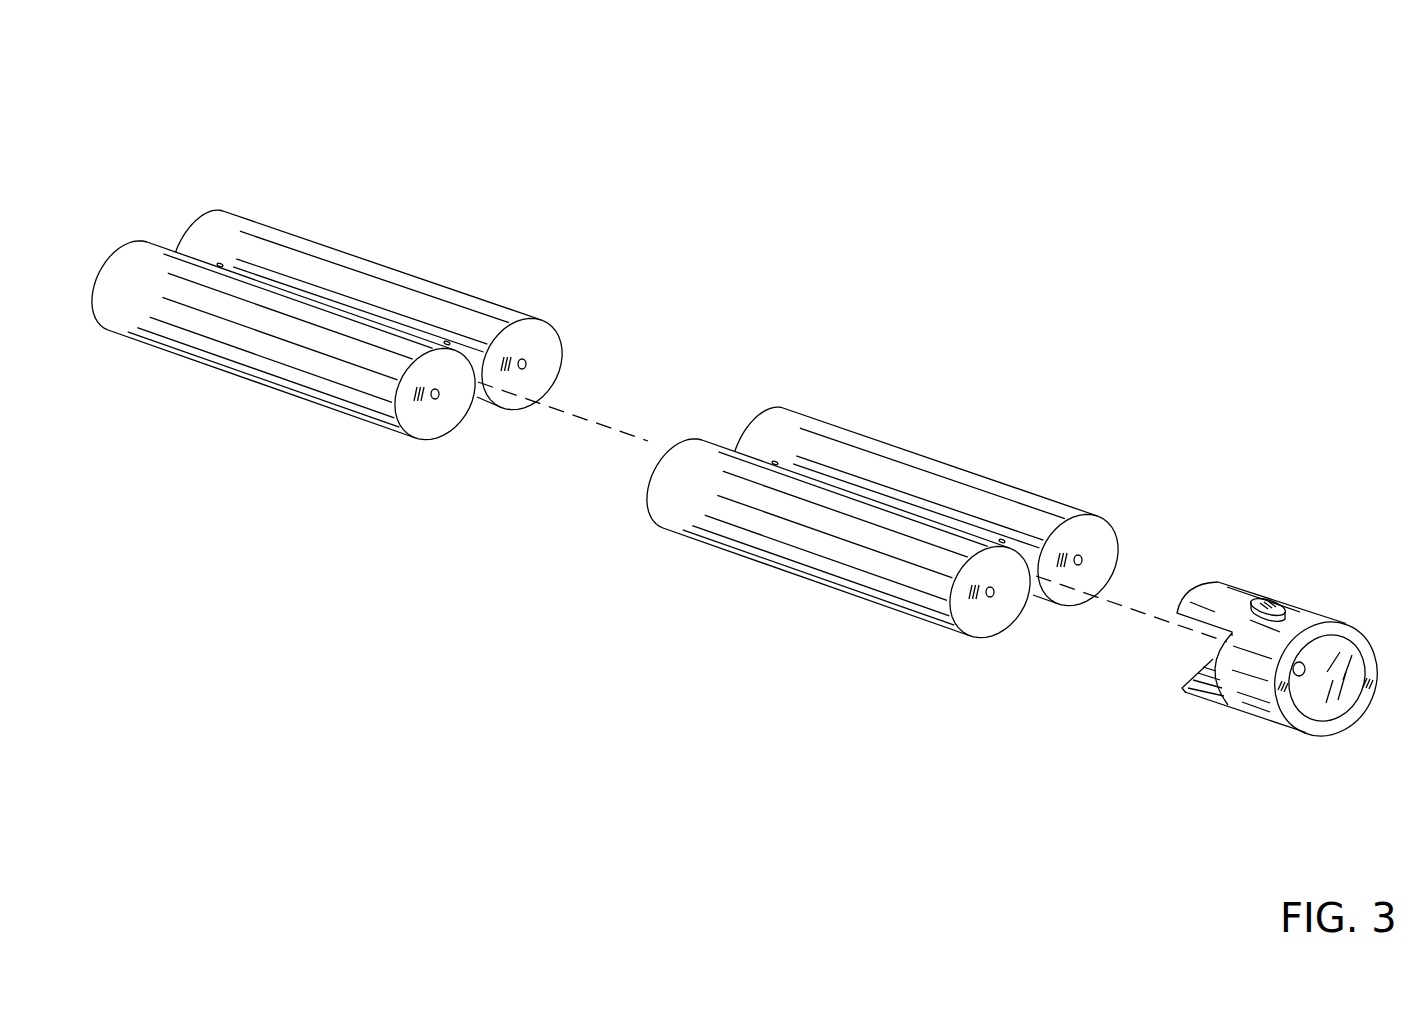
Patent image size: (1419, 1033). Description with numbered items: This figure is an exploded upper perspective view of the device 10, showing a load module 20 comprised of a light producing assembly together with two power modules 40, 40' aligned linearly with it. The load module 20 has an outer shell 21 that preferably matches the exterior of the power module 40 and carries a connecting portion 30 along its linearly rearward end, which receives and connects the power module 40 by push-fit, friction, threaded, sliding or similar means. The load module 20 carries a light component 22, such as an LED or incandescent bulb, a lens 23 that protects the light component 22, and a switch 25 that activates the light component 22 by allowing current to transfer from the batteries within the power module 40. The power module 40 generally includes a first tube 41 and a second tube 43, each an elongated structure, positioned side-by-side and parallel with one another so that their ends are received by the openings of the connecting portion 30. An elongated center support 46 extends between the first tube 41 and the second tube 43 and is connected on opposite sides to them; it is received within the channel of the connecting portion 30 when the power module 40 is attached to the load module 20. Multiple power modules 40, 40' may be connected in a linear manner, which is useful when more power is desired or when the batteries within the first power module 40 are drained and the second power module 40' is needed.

The device 10 is at (1248, 120).
The load module 20 is at (1222, 775).
The outer shell 21 is at (1318, 617).
The light component 22 is at (1303, 676).
The lens 23 is at (1337, 705).
The switch 25 is at (1278, 612).
The connecting portion 30 is at (1227, 585).
The power module 40 is at (894, 503).
The second power module 40' is at (349, 301).
The first tube 41 is at (838, 573).
The second tube 43 is at (953, 468).
The center support 46 is at (853, 422).